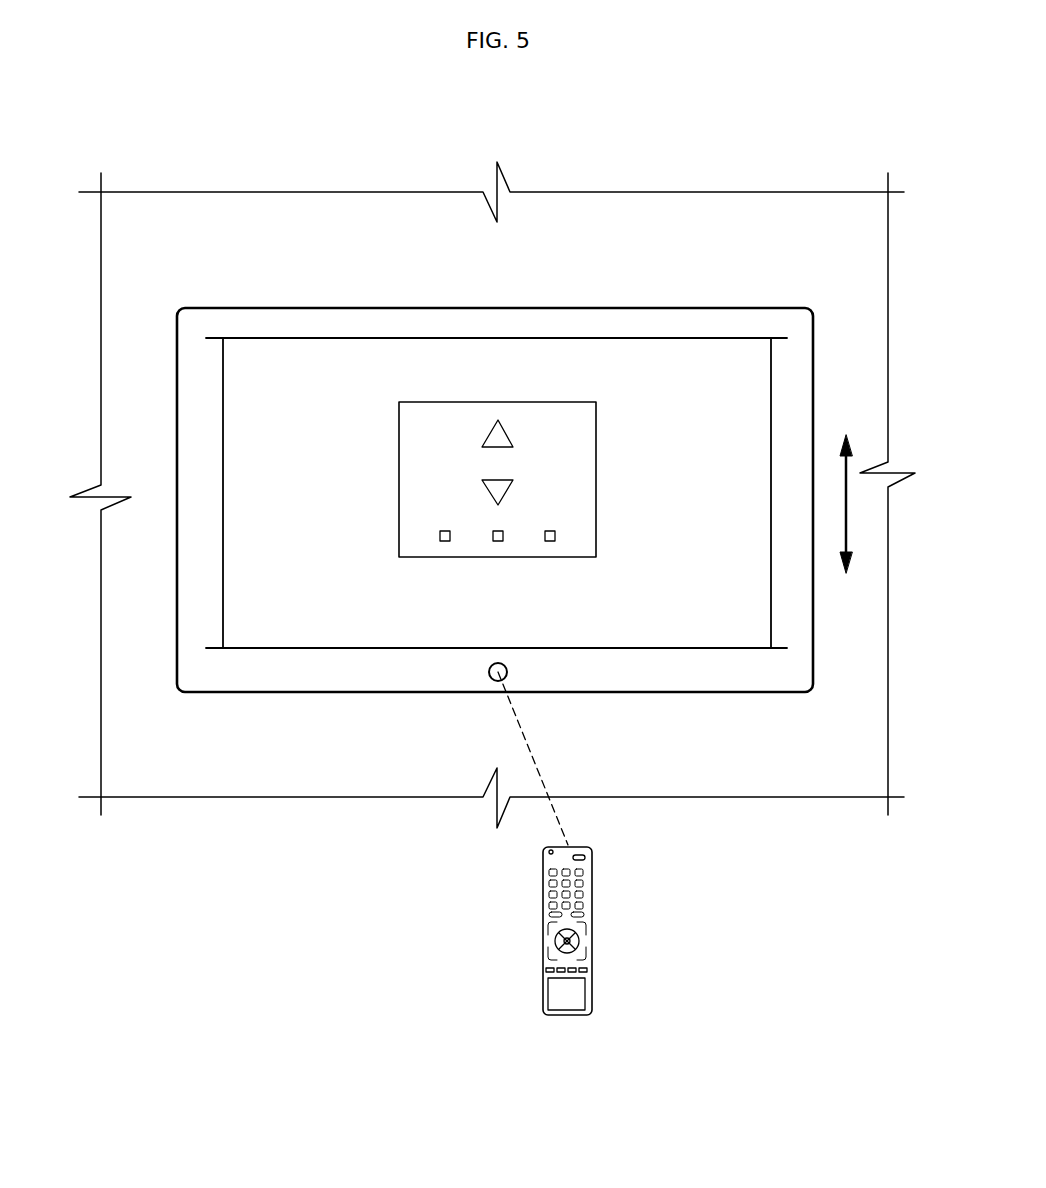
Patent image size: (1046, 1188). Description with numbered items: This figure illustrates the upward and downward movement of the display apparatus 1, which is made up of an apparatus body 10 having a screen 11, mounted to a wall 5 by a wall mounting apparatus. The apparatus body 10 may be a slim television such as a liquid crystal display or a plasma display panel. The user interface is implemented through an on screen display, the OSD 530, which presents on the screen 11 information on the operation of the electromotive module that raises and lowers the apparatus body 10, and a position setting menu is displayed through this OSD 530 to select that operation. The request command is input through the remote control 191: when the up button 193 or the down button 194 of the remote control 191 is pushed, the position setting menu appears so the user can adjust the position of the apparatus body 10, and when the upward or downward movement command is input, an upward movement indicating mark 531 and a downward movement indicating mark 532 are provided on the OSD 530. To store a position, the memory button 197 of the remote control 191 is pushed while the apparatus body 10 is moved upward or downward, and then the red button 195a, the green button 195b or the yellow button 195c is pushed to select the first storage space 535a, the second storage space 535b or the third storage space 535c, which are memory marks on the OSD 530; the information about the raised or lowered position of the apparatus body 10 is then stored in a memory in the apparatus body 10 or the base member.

The display apparatus 1 is at (279, 251).
The wall 5 is at (603, 224).
The apparatus body 10 is at (466, 320).
The screen 11 is at (558, 360).
The on screen display (OSD) 530 is at (452, 402).
The upward movement indicating mark 531 is at (492, 437).
The downward movement indicating mark 532 is at (505, 492).
The first storage space 535a is at (445, 543).
The second storage space 535b is at (498, 543).
The third storage space 535c is at (550, 543).
The remote control 191 is at (593, 866).
The up button 193 is at (556, 931).
The down button 194 is at (579, 944).
The red button 195a is at (546, 970).
The green button 195b is at (561, 973).
The yellow button 195c is at (572, 973).
The memory button 197 is at (587, 970).